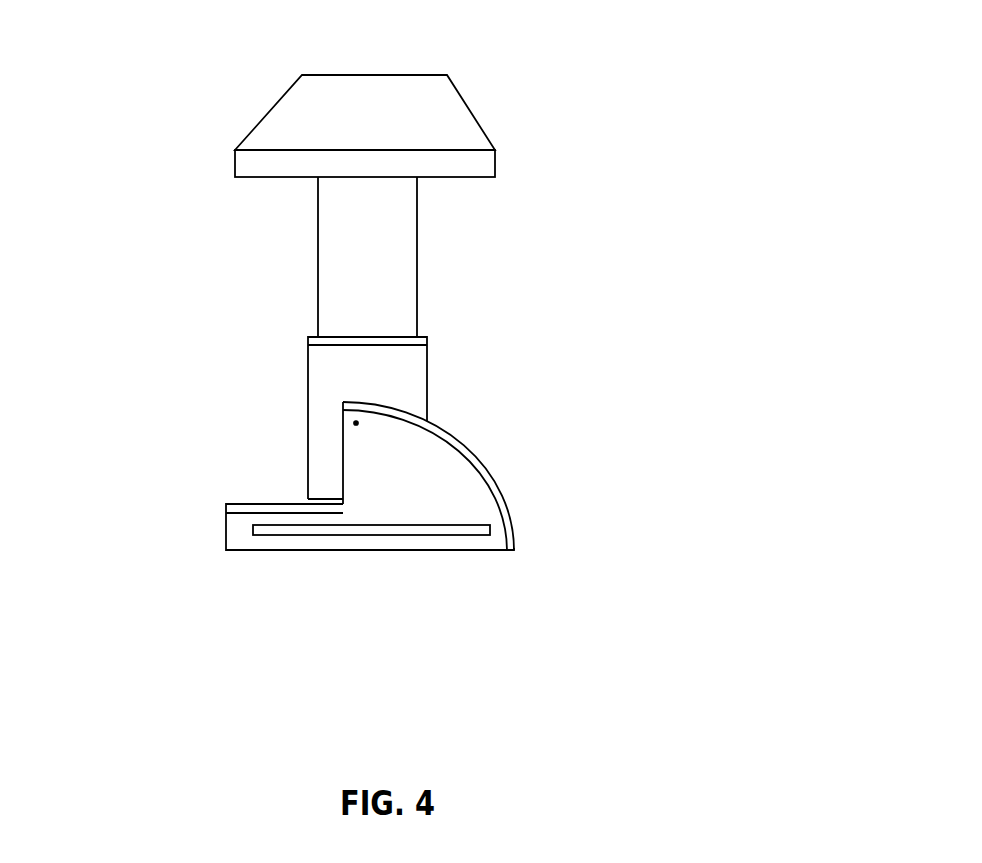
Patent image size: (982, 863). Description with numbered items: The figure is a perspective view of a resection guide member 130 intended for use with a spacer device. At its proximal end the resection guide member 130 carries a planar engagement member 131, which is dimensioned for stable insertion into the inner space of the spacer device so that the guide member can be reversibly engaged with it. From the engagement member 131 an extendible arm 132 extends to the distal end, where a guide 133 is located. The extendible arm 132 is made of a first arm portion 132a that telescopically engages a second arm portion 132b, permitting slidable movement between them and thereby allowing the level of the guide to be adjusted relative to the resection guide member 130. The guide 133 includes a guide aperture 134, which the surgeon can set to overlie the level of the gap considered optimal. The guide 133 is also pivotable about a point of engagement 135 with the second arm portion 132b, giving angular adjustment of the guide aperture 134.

The resection guide member 130 is at (123, 63).
The planar engagement member 131 is at (393, 92).
The extendible arm 132 is at (267, 292).
The first arm portion 132a is at (392, 223).
The second arm portion 132b is at (392, 368).
The guide 133 is at (392, 473).
The guide aperture 134 is at (253, 531).
The point of engagement 135 is at (360, 422).